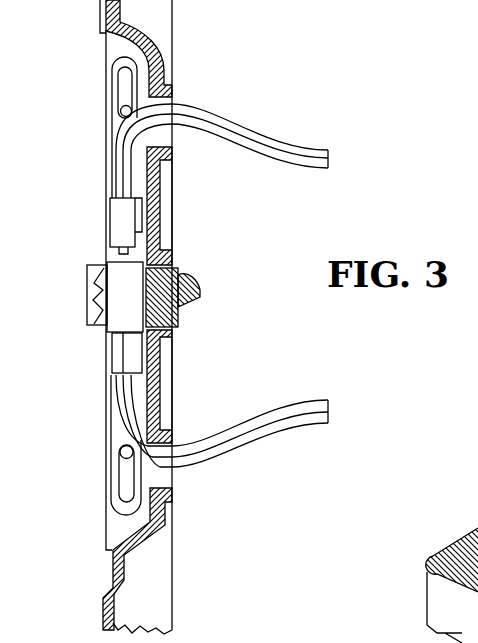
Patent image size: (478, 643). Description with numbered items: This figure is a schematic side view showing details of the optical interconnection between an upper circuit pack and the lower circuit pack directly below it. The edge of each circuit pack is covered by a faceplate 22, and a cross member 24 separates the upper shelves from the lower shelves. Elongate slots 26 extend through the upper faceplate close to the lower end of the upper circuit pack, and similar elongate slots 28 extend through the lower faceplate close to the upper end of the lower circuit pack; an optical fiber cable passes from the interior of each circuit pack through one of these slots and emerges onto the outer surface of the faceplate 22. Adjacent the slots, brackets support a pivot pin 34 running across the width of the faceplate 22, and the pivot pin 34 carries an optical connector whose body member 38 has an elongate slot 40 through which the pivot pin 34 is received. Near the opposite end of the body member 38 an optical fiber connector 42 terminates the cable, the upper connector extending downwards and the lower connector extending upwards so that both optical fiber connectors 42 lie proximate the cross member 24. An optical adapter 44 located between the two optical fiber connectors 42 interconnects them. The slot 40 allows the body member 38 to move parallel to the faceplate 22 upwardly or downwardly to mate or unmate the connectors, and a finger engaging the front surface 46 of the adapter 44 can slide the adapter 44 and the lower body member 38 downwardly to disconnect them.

The faceplate 22 is at (158, 230).
The cross member 24 is at (177, 284).
The elongate slots 26 is at (172, 92).
The elongate slots 28 is at (170, 495).
The pivot pin 34 is at (413, 641).
The body member 38 is at (106, 143).
The elongate slot 40 is at (123, 88).
The optical fiber connector 42 is at (123, 218).
The optical adapter 44 is at (118, 275).
The front surface 46 is at (90, 304).